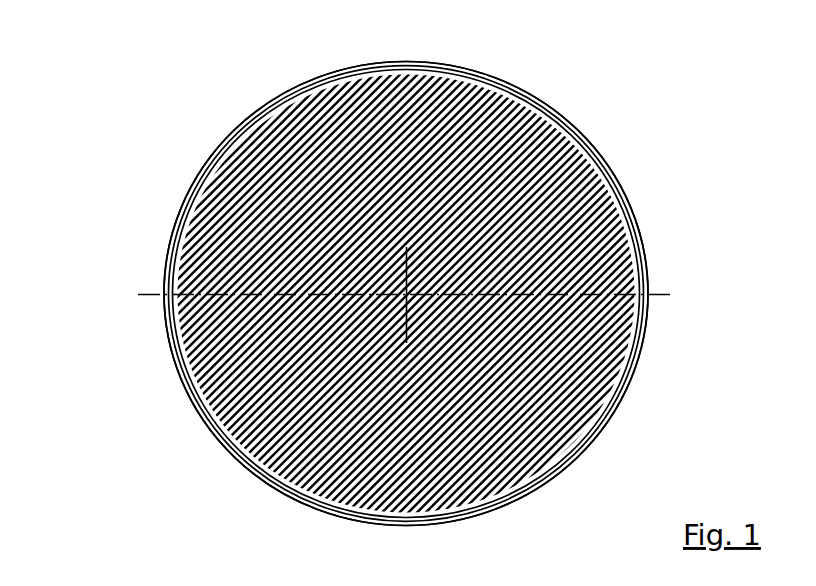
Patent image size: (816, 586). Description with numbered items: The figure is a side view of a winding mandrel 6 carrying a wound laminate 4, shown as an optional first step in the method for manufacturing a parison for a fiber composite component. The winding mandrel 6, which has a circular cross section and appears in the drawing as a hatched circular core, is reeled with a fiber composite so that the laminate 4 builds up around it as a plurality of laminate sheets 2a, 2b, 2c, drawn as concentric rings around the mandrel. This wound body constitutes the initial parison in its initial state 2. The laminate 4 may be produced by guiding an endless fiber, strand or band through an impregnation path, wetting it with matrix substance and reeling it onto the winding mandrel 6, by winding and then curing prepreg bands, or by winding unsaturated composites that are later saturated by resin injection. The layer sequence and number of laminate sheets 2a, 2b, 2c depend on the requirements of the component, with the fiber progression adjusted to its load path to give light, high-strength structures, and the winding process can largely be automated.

The initial parison in an initial state 2 is at (397, 294).
The laminate sheet 2a is at (174, 308).
The laminate sheet 2b is at (172, 252).
The laminate sheet 2c is at (184, 198).
The laminate 4 is at (624, 190).
The winding mandrel 6 is at (597, 240).